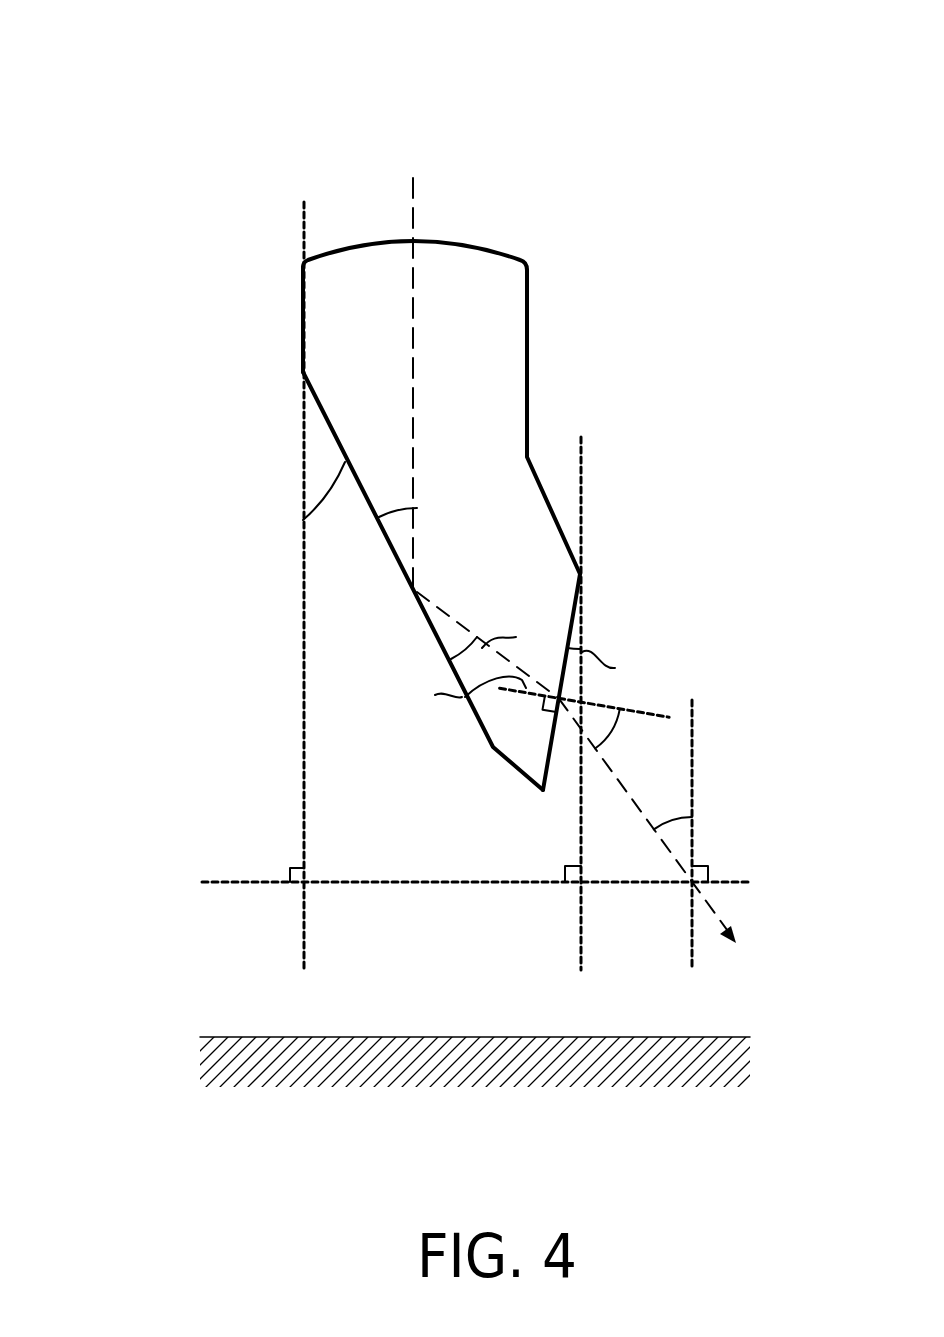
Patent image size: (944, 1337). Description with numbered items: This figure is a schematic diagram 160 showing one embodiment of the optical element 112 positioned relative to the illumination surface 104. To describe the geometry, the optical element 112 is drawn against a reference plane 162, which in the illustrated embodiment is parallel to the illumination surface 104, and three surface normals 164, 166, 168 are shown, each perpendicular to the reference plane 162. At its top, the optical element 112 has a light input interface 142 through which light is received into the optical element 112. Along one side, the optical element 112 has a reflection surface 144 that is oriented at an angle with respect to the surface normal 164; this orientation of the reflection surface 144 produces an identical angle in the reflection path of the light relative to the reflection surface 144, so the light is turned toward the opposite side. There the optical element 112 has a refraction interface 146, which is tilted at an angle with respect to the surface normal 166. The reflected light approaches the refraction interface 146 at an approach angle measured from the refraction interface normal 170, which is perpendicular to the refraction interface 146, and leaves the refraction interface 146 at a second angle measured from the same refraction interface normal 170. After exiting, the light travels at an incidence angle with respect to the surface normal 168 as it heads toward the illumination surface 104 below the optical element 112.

The ray path geometry of the light guide 160 is at (207, 56).
The optical element 112 is at (527, 342).
The light input interface 142 is at (489, 238).
The reflection surface 144 is at (470, 727).
The refraction interface 146 is at (560, 790).
The reference plane 162 is at (232, 882).
The surface normal 164 is at (304, 650).
The surface normal 166 is at (581, 465).
The surface normal 168 is at (694, 728).
The refraction interface normal 170 is at (663, 717).
The illumination surface 104 is at (741, 1022).